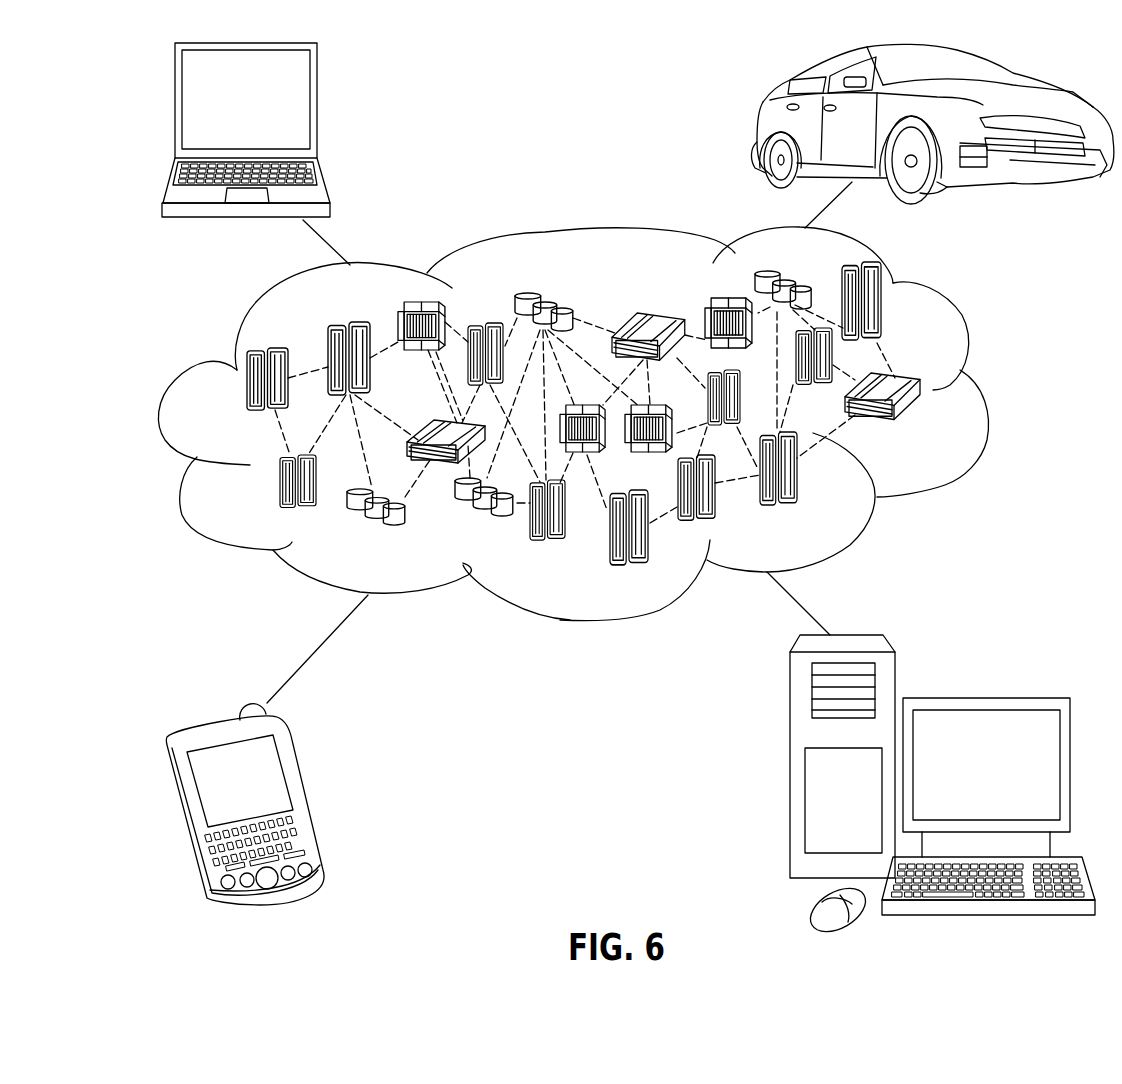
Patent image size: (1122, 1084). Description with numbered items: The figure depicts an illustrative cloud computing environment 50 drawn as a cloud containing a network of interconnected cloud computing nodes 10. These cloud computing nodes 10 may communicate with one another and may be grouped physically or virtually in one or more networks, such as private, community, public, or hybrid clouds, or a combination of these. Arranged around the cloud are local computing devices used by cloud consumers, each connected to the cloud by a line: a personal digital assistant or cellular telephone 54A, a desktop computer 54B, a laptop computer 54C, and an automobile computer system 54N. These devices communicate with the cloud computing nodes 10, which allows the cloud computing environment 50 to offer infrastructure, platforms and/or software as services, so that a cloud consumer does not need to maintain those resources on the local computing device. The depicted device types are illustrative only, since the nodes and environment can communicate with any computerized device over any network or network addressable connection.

The cloud computing environment 50 is at (601, 424).
The cloud computing nodes 10 is at (935, 427).
The personal digital assistant (PDA) or cellular telephone 54A is at (307, 793).
The desktop computer 54B is at (983, 697).
The laptop computer 54C is at (317, 110).
The automobile computer system 54N is at (762, 122).